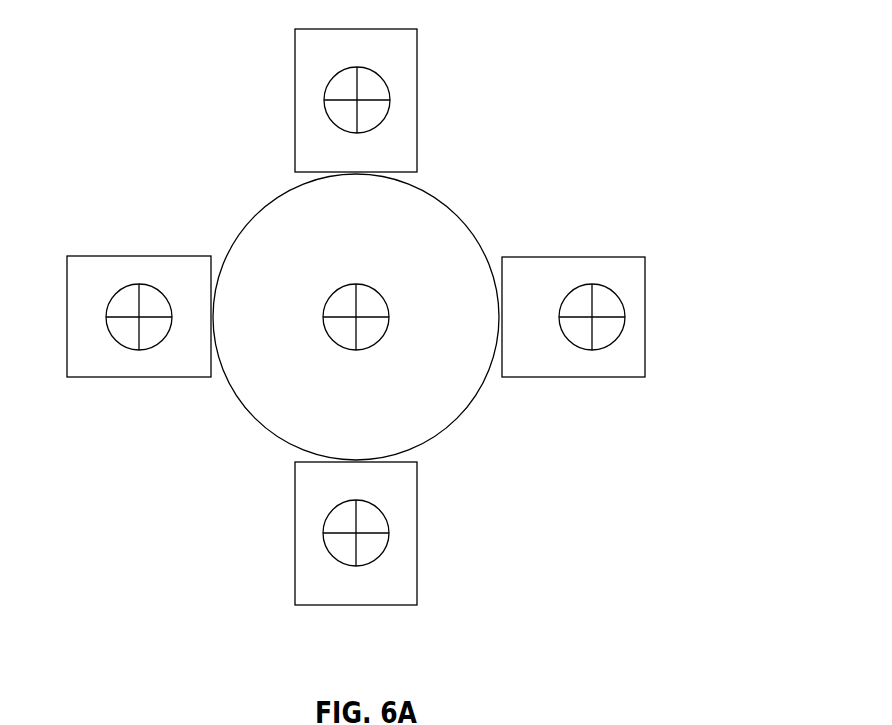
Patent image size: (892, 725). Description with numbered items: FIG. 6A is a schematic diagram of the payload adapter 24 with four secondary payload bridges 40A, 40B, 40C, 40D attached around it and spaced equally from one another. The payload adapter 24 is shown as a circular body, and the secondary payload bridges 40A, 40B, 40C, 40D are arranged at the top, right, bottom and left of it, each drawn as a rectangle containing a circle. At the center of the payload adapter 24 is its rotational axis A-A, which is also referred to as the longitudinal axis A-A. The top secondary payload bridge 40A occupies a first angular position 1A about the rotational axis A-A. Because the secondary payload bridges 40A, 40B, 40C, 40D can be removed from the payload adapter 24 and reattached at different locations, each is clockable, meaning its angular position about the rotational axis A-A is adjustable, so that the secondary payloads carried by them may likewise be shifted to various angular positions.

The payload adapter 24 is at (272, 207).
The secondary payload bridge 40A is at (417, 101).
The secondary payload bridge 40B is at (645, 317).
The secondary payload bridge 40C is at (357, 605).
The secondary payload bridge 40D is at (98, 377).
The first angular position 1A is at (543, 59).
The rotational axis A-A is at (358, 313).